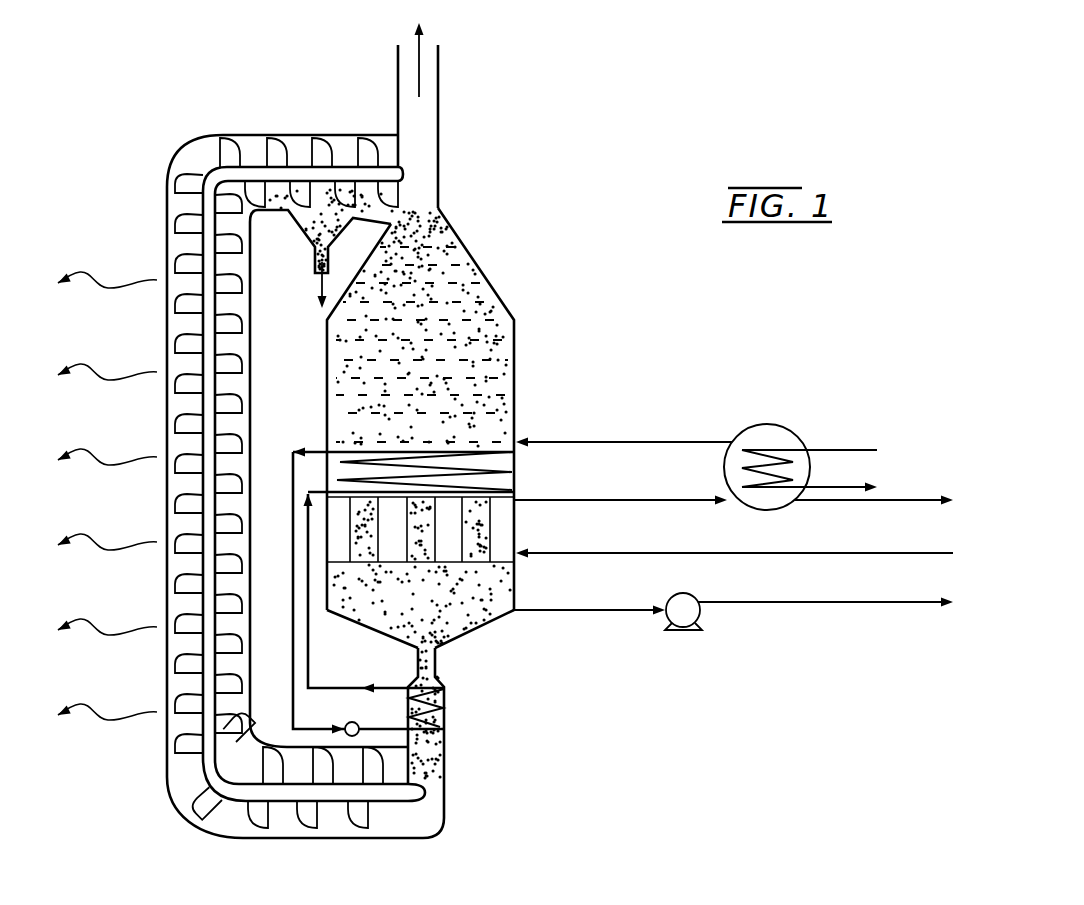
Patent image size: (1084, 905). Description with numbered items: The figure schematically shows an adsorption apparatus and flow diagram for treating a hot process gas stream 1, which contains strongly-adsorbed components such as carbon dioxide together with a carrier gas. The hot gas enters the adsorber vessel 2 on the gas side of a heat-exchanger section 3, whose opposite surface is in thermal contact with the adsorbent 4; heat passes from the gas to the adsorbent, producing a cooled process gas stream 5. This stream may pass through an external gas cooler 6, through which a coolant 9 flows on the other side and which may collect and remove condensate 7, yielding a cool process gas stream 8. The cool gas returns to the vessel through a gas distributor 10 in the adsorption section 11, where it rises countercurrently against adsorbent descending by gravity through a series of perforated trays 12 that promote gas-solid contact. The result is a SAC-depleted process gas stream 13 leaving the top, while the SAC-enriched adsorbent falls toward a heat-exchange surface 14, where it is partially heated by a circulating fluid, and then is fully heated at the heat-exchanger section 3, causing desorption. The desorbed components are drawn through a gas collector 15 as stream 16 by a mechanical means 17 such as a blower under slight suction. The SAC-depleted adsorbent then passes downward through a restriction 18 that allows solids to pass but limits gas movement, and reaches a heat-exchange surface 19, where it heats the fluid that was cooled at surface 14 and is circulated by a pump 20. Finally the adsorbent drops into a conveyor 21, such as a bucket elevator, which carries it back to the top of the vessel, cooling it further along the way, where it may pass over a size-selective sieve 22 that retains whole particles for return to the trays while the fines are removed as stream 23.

The hot process gas stream 1 is at (855, 552).
The adsorber vessel 2 is at (558, 175).
The heat-exchanger section 3 is at (511, 520).
The adsorbent 4 is at (505, 327).
The cooled process gas stream 5 is at (625, 500).
The external gas cooler 6 is at (767, 424).
The condensate 7 is at (897, 500).
The cool process gas stream 8 is at (623, 440).
The coolant 9 is at (833, 447).
The gas distributor 10 is at (517, 430).
The adsorption section 11 is at (514, 258).
The perforated trays 12 is at (490, 293).
The SAC-depleted process gas stream 13 is at (422, 67).
The heat-exchange surface 14 is at (507, 480).
The gas collector 15 is at (490, 620).
The stream of desorbed SAC 16 is at (783, 602).
The mechanical means 17 is at (675, 594).
The constricted neck 18 is at (451, 667).
The heat-exchange surface 19 is at (447, 714).
The pump 20 is at (350, 721).
The conveyor 21 is at (185, 222).
The size-selective sieve 22 is at (296, 225).
The fines stream 23 is at (320, 285).